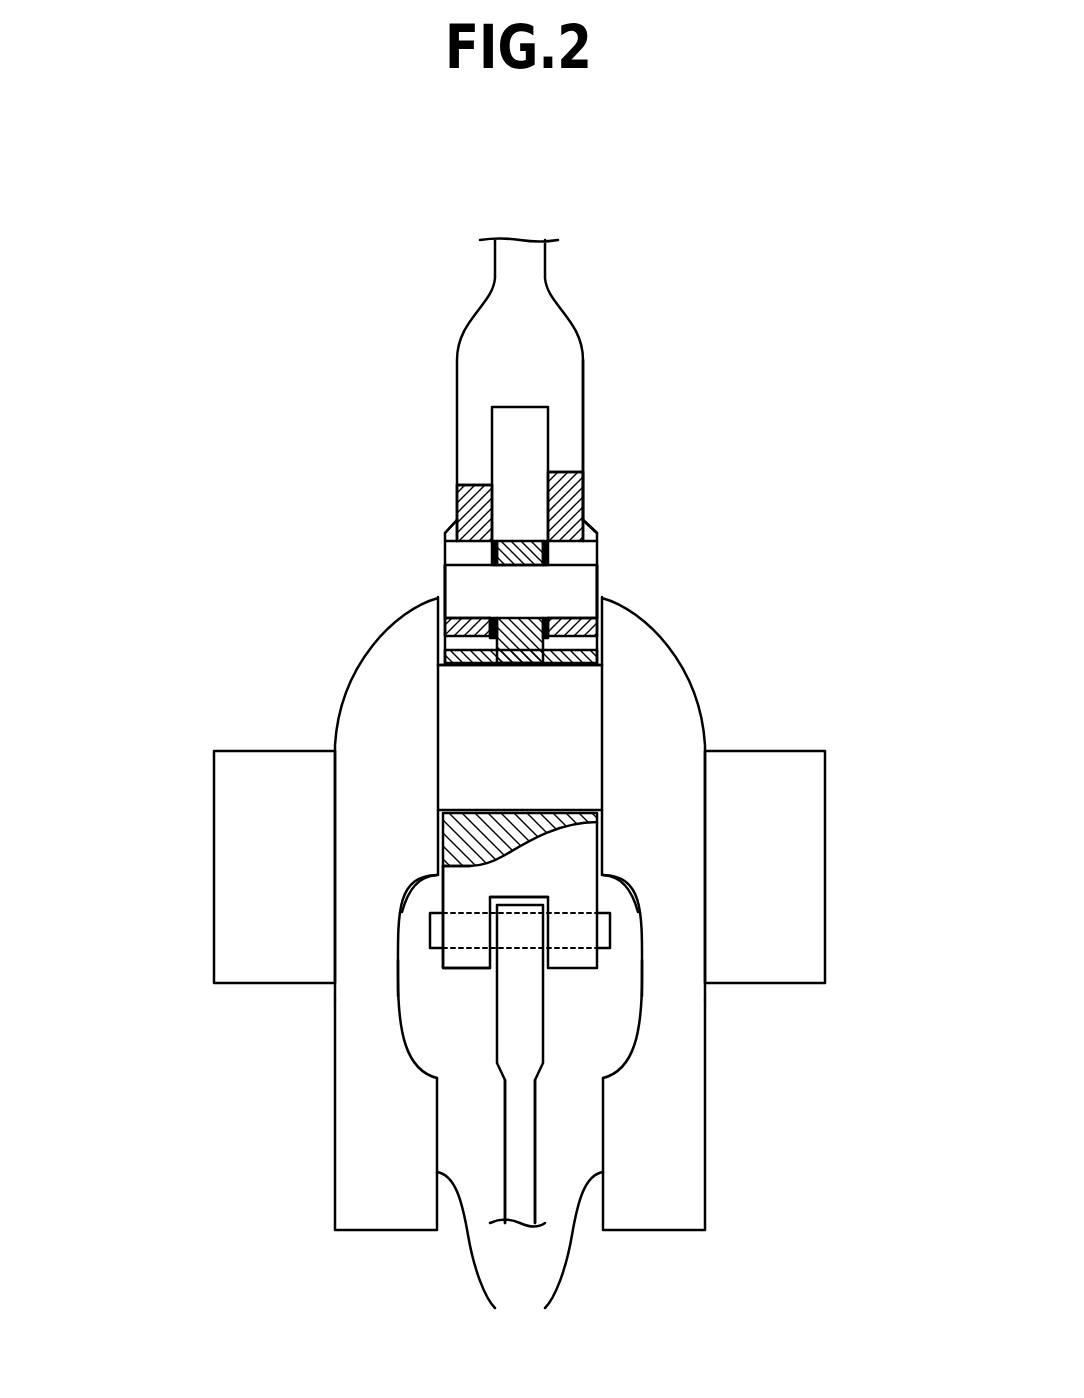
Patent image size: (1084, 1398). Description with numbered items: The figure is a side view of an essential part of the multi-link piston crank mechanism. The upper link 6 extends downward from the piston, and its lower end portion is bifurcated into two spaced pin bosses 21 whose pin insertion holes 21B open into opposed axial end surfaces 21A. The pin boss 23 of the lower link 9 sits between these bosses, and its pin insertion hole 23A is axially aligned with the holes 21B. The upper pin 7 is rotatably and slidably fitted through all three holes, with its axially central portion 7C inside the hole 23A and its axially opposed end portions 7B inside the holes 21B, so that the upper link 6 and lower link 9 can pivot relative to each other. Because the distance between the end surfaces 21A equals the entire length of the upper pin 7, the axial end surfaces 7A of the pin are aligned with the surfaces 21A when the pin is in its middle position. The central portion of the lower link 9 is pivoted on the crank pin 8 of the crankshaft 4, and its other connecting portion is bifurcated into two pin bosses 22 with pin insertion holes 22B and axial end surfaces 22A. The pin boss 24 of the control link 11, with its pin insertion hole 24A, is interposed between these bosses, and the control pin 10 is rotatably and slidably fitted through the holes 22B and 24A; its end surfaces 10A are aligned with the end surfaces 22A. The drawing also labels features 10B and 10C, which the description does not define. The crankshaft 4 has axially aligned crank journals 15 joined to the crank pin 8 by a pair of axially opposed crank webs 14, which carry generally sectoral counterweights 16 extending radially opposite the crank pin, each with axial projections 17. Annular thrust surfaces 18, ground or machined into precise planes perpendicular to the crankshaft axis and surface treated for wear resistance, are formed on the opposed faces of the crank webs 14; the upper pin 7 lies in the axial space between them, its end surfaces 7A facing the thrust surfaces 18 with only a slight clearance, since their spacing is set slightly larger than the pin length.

The crankshaft 4 is at (253, 1000).
The upper link 6 is at (550, 360).
The upper pin 7 is at (602, 552).
The axial end surfaces of upper pin 7A is at (444, 565).
The axially opposed end portions of upper pin 7B is at (444, 568).
The axially central portion of upper pin 7C is at (585, 518).
The crank pin 8 is at (450, 752).
The lower link 9 is at (563, 852).
The control pin 10 is at (527, 953).
The end surfaces of control pin 10A is at (447, 950).
The needle valve upper flange surface 10B is at (458, 928).
The needle valve flange 10C is at (493, 960).
The control link 11 is at (517, 1137).
The crank webs 14 is at (368, 667).
The crank journals 15 is at (235, 835).
The counterweights 16 is at (355, 1050).
The axial projections 17 is at (520, 1251).
The annular thrust surfaces 18 is at (463, 597).
The pin bosses of upper link 21 is at (448, 538).
The axial end surfaces of pin bosses 21A is at (444, 560).
The pin insertion holes of pin bosses 21B is at (458, 537).
The pin bosses of lower link 22 is at (462, 963).
The axial end surfaces of pin bosses 22A is at (460, 963).
The pin insertion holes of pin bosses 22B is at (457, 940).
The pin boss of lower link 23 is at (517, 583).
The pin insertion hole 23A is at (518, 617).
The pin boss of control link 24 is at (490, 930).
The pin insertion hole 24A is at (470, 862).